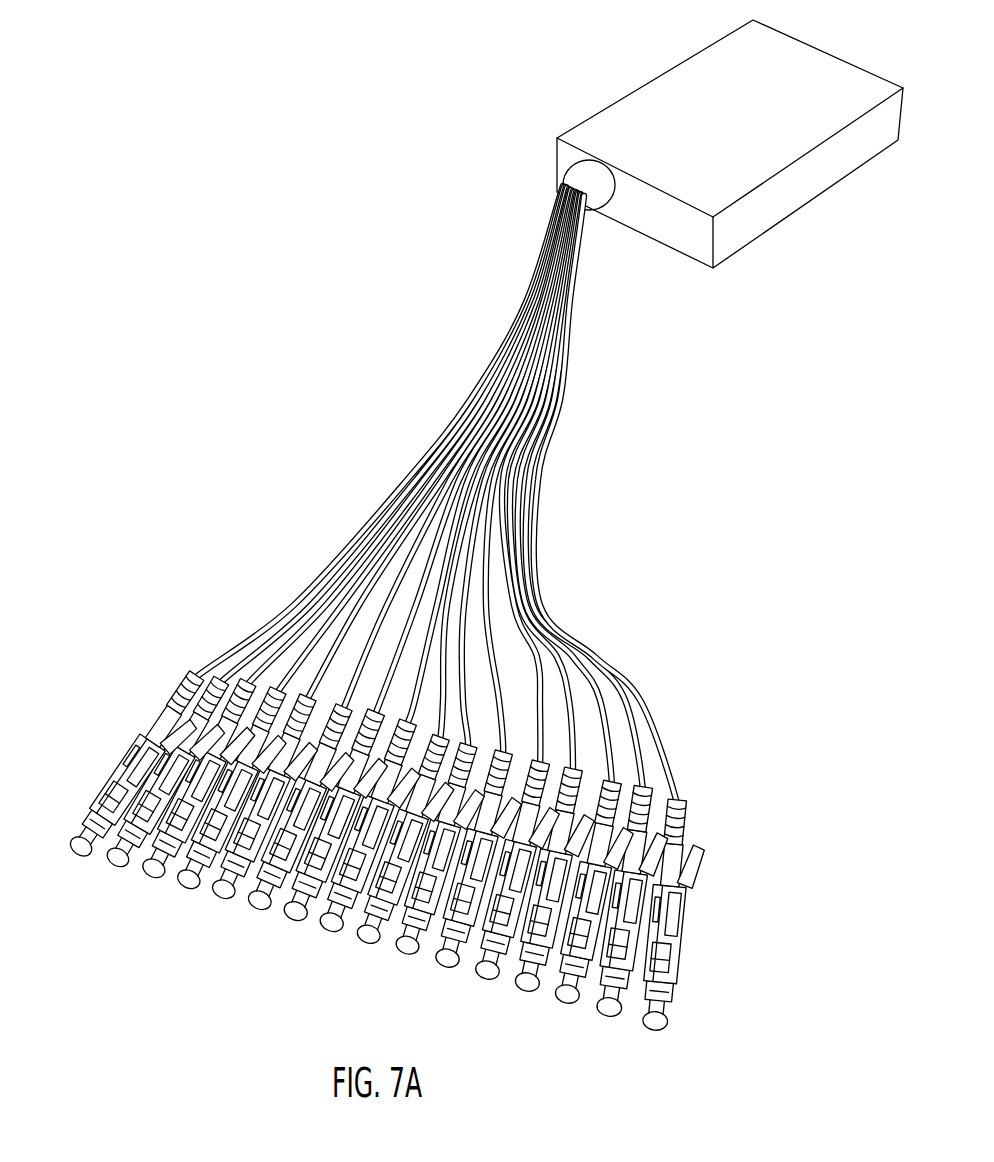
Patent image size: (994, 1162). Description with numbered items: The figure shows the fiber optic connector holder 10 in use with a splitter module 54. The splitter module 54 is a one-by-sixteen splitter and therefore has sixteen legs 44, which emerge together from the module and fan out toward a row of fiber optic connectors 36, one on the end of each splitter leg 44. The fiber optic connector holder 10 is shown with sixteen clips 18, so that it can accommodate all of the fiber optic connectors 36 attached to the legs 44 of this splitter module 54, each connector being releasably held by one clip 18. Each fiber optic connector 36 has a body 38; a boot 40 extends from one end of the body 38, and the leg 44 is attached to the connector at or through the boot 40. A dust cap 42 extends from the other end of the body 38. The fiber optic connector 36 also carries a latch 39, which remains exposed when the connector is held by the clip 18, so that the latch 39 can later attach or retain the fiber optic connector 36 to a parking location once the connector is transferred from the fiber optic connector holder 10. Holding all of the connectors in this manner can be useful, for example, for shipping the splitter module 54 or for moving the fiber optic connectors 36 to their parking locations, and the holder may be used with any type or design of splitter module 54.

The fiber optic connector holder 10 is at (148, 668).
The clip 18 is at (698, 857).
The fiber optic connector 36 is at (688, 920).
The body 38 is at (681, 988).
The latch 39 is at (676, 958).
The boot 40 is at (682, 830).
The dust cap 42 is at (669, 1018).
The legs 44 is at (298, 573).
The splitter module 54 is at (637, 90).